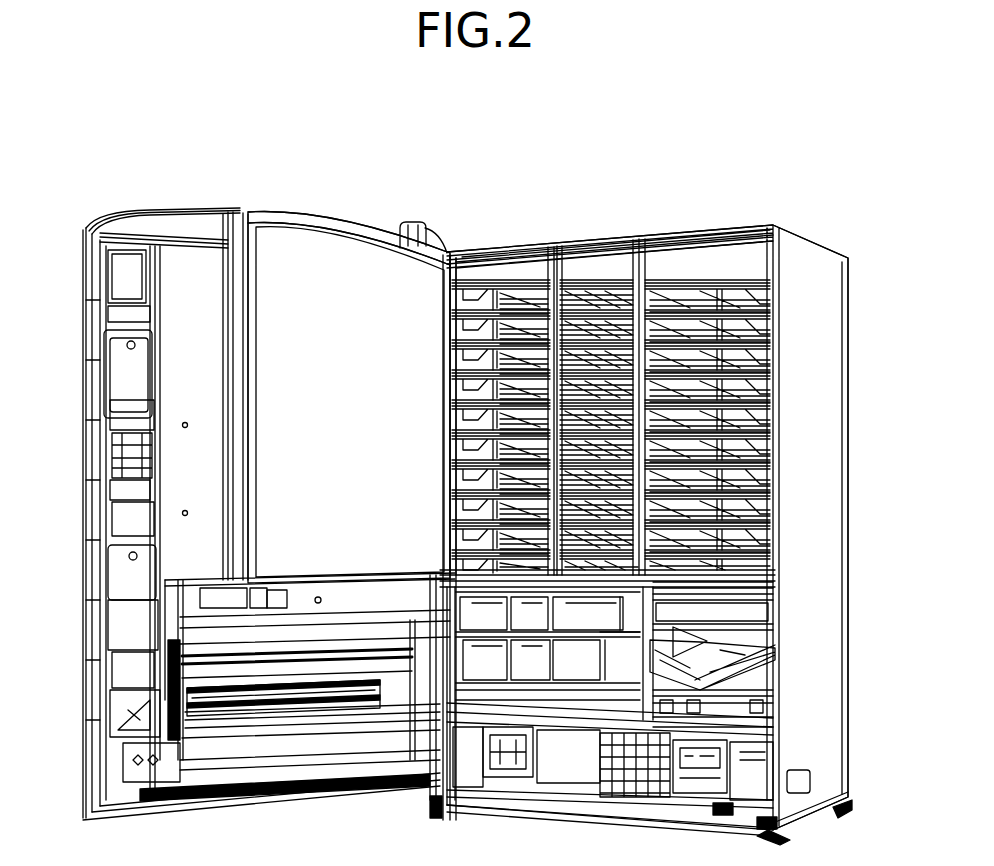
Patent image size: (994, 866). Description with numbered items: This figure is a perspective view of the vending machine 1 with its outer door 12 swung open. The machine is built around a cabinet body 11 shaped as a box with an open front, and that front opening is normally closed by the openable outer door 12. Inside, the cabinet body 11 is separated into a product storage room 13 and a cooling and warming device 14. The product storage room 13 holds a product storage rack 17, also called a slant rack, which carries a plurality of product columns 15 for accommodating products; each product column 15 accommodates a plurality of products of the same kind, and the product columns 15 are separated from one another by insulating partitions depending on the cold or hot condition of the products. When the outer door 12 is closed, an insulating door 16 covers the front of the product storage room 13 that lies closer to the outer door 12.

The vending machine 1 is at (763, 123).
The cabinet body 11 is at (740, 229).
The outer door 12 is at (86, 363).
The product storage room 13 is at (778, 302).
The cooling and warming device 14 is at (718, 757).
The product column 15 is at (522, 295).
The insulating door 16 is at (340, 265).
The product storage rack 17 is at (757, 401).